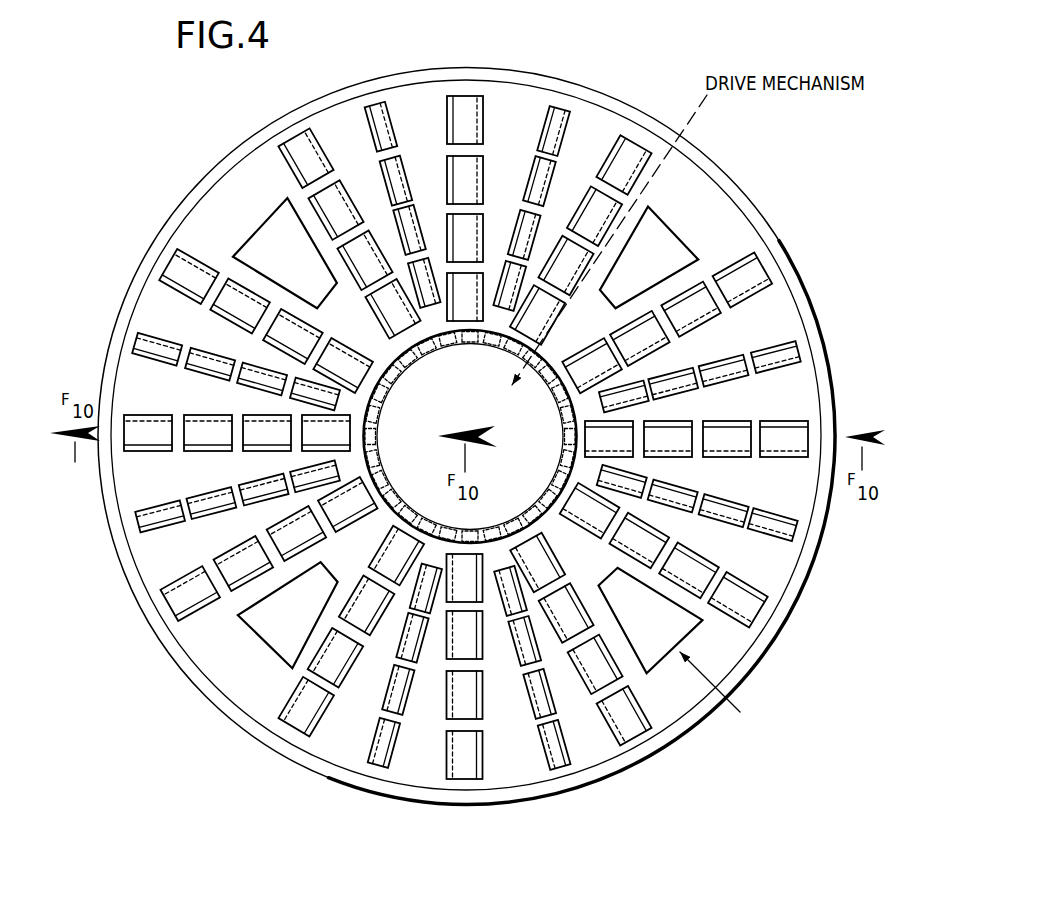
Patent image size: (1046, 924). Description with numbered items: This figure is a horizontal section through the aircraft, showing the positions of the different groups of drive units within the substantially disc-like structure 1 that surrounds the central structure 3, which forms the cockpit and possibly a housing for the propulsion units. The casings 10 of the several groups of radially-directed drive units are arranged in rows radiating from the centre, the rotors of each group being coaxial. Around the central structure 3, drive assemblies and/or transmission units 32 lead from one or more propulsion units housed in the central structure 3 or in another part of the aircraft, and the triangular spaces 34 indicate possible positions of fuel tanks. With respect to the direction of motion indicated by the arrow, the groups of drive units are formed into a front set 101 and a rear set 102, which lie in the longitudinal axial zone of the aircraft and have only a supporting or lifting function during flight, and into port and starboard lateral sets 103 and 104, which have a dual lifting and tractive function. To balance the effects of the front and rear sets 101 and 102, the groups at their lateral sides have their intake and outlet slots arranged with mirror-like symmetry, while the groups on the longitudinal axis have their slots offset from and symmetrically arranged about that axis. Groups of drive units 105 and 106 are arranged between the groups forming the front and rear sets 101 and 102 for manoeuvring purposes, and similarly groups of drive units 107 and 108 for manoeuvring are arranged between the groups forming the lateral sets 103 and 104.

The disc-like structure 1 is at (196, 186).
The central structure 3 is at (476, 384).
The casings 10 is at (363, 606).
The drive assemblies and/or transmission units 32 is at (382, 437).
The fuel tanks 34 is at (300, 630).
The front set of drive units 101 is at (200, 256).
The rear set of drive units 102 is at (719, 262).
The lateral set of drive units 103 is at (439, 692).
The lateral set of drive units 104 is at (330, 133).
The manoeuvring drive unit groups 105 is at (186, 332).
The manoeuvring drive unit groups 106 is at (766, 342).
The manoeuvring drive unit groups 107 is at (398, 758).
The manoeuvring drive unit groups 108 is at (400, 124).